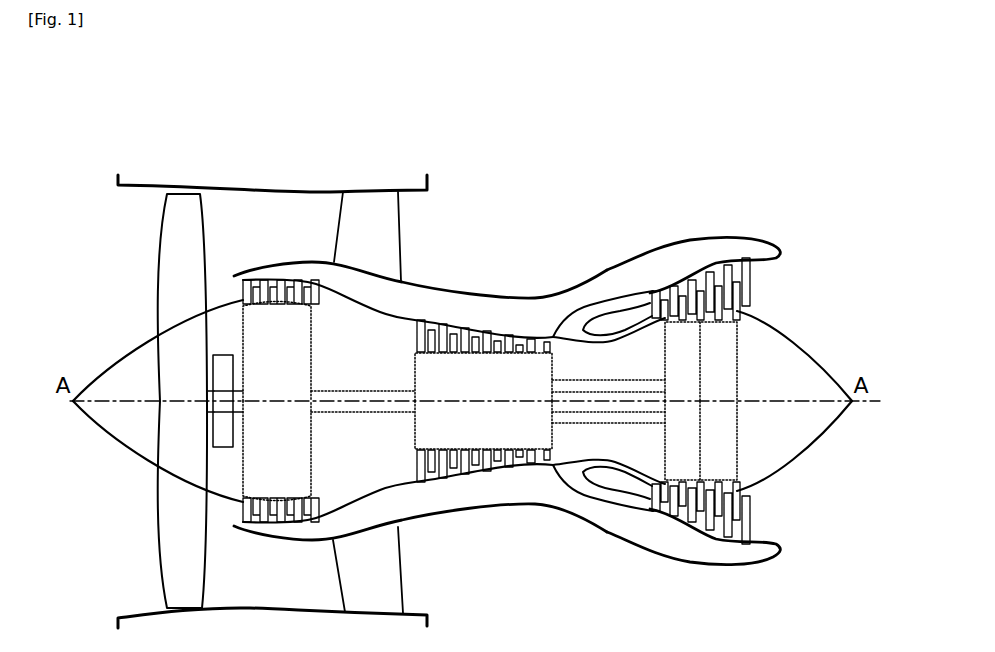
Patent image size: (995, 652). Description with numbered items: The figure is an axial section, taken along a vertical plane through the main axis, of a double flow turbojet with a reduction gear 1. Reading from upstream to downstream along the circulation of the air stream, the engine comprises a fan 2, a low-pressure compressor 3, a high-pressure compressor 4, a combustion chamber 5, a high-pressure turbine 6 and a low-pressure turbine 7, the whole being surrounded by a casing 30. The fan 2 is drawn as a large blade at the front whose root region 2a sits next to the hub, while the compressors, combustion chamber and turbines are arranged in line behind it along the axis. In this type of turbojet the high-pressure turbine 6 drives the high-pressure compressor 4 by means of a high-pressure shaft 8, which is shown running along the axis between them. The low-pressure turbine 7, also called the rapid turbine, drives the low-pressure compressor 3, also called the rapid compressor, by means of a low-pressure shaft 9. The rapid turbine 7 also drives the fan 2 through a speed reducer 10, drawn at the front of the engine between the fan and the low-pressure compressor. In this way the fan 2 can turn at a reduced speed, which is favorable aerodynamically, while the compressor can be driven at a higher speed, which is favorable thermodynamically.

The double flow turbojet with a reduction gear 1 is at (551, 152).
The fan 2 is at (180, 252).
The fan blade root 2a is at (209, 422).
The low-pressure compressor 3 is at (278, 273).
The high-pressure compressor 4 is at (463, 312).
The combustion chamber 5 is at (604, 318).
The high-pressure turbine 6 is at (683, 271).
The low-pressure turbine 7 is at (718, 225).
The high-pressure shaft 8 is at (604, 380).
The low-pressure shaft 9 is at (240, 414).
The speed reducer 10 is at (214, 373).
The casing 30 is at (315, 187).